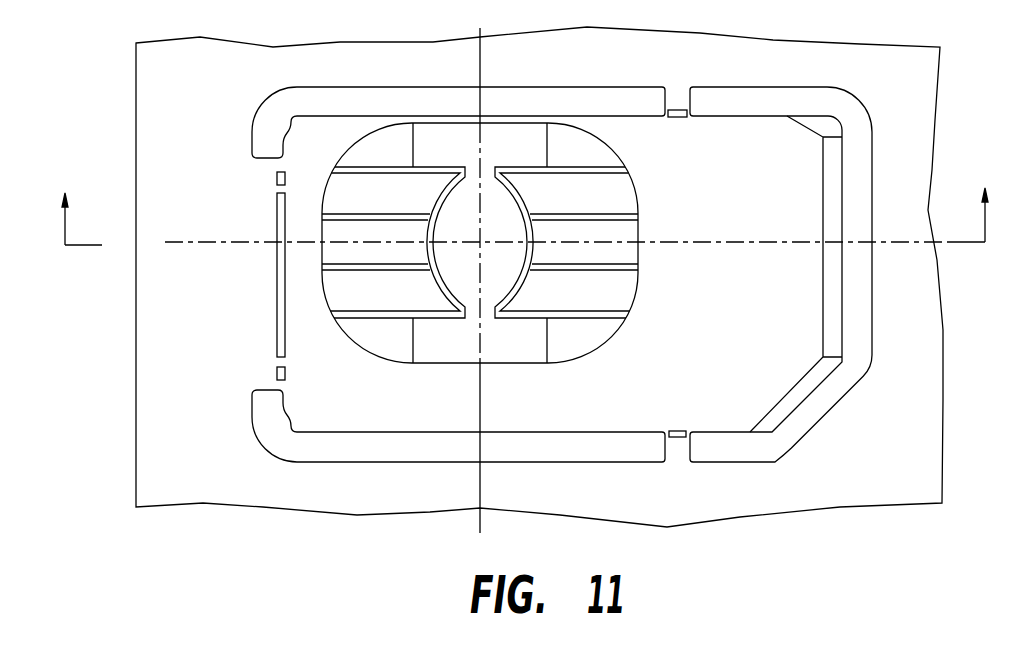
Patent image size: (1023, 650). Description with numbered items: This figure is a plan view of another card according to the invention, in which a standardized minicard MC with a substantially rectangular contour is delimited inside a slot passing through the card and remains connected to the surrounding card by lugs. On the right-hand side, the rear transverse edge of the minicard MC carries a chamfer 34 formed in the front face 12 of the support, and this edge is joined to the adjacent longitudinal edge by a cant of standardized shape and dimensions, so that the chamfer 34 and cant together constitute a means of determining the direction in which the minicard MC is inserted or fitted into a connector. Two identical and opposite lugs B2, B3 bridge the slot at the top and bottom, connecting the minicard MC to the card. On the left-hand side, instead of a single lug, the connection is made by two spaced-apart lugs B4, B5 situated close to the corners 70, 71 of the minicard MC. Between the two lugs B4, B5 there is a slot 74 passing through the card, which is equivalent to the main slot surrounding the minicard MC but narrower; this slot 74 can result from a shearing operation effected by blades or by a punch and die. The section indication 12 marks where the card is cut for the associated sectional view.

The corner 71 is at (293, 129).
The corner 70 is at (290, 423).
The slot 74 is at (277, 292).
The lug B4 is at (275, 180).
The lug B5 is at (275, 373).
The lug B2 is at (678, 97).
The lug B3 is at (673, 450).
The minicard MC is at (788, 216).
The chamfer 34 is at (833, 173).
The front face 12 is at (525, 202).